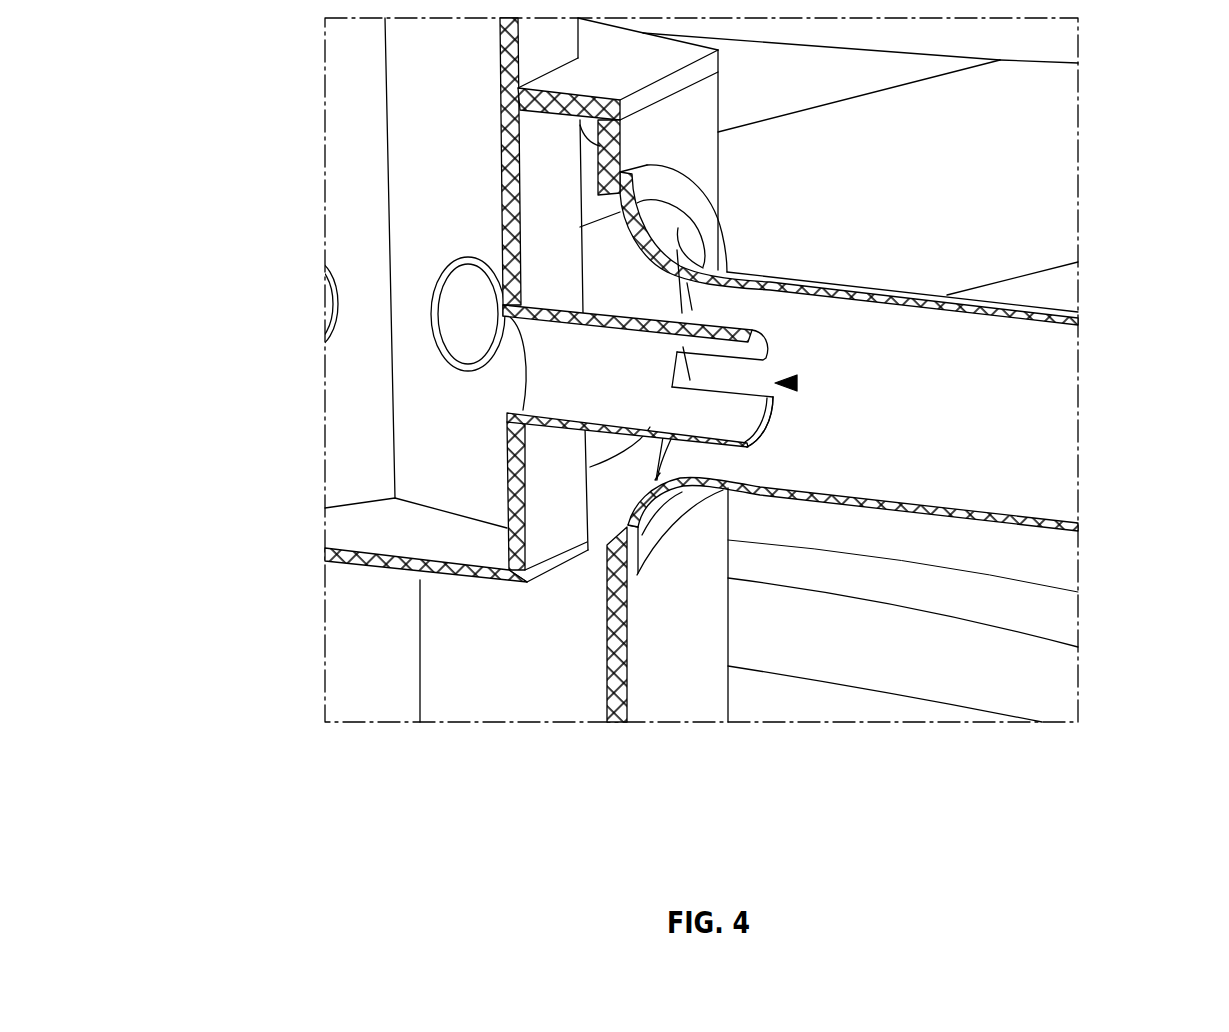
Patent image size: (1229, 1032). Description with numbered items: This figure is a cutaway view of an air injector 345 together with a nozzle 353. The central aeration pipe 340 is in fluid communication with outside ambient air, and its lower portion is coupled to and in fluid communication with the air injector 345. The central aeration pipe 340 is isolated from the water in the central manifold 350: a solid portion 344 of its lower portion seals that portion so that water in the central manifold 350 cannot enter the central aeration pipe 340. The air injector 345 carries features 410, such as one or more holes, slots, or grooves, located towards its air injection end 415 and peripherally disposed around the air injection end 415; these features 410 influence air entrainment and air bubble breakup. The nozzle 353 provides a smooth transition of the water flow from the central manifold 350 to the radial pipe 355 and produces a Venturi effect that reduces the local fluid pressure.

The central aeration pipe 340 is at (557, 517).
The solid portion 344 is at (410, 545).
The air injector 345 is at (567, 408).
The central manifold 350 is at (653, 702).
The nozzle 353 is at (652, 478).
The radial pipe 355 is at (1053, 432).
The features 410 is at (797, 385).
The air injection end 415 is at (767, 437).